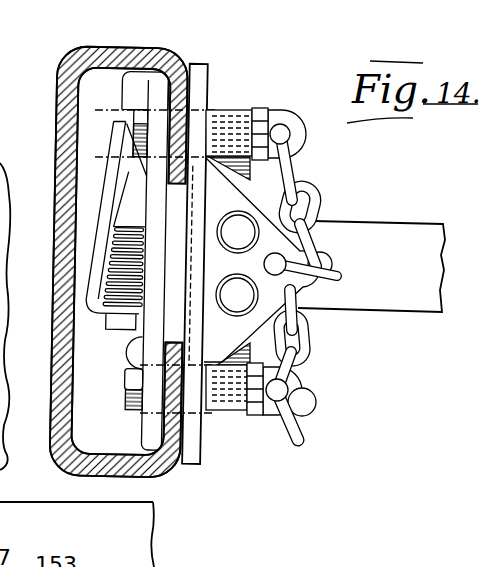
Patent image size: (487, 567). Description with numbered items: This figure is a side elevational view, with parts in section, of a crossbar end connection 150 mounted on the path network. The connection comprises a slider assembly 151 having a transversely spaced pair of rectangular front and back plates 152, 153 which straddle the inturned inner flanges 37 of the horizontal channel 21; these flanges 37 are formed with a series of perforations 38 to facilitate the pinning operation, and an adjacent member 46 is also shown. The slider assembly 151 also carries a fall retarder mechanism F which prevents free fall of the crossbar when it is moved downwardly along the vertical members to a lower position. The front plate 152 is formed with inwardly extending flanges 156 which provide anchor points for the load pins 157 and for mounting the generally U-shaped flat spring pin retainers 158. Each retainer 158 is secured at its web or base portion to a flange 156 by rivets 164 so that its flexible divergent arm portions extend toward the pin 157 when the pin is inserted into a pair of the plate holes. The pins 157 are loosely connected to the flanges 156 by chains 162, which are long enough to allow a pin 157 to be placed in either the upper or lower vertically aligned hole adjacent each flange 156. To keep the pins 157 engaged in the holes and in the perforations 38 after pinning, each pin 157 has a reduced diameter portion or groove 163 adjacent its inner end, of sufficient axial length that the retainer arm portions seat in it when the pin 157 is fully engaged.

The horizontal channel 21 is at (58, 197).
The perforations 38 is at (0, 142).
The slider assembly 151 is at (212, 61).
The front plate 152 is at (201, 445).
The back plate 153 is at (143, 437).
The load pins 157 is at (130, 113).
The inner flanges 37 is at (126, 392).
The fall retarder mechanism F is at (88, 320).
The inwardly extending flanges 156 is at (238, 344).
The rivets 164 is at (217, 257).
The reduced diameter portion or groove 163 is at (233, 123).
The pin retainers 158 is at (250, 178).
The chains 162 is at (313, 200).
The crossbar end connection 150 is at (274, 442).
The bar 46 is at (395, 310).